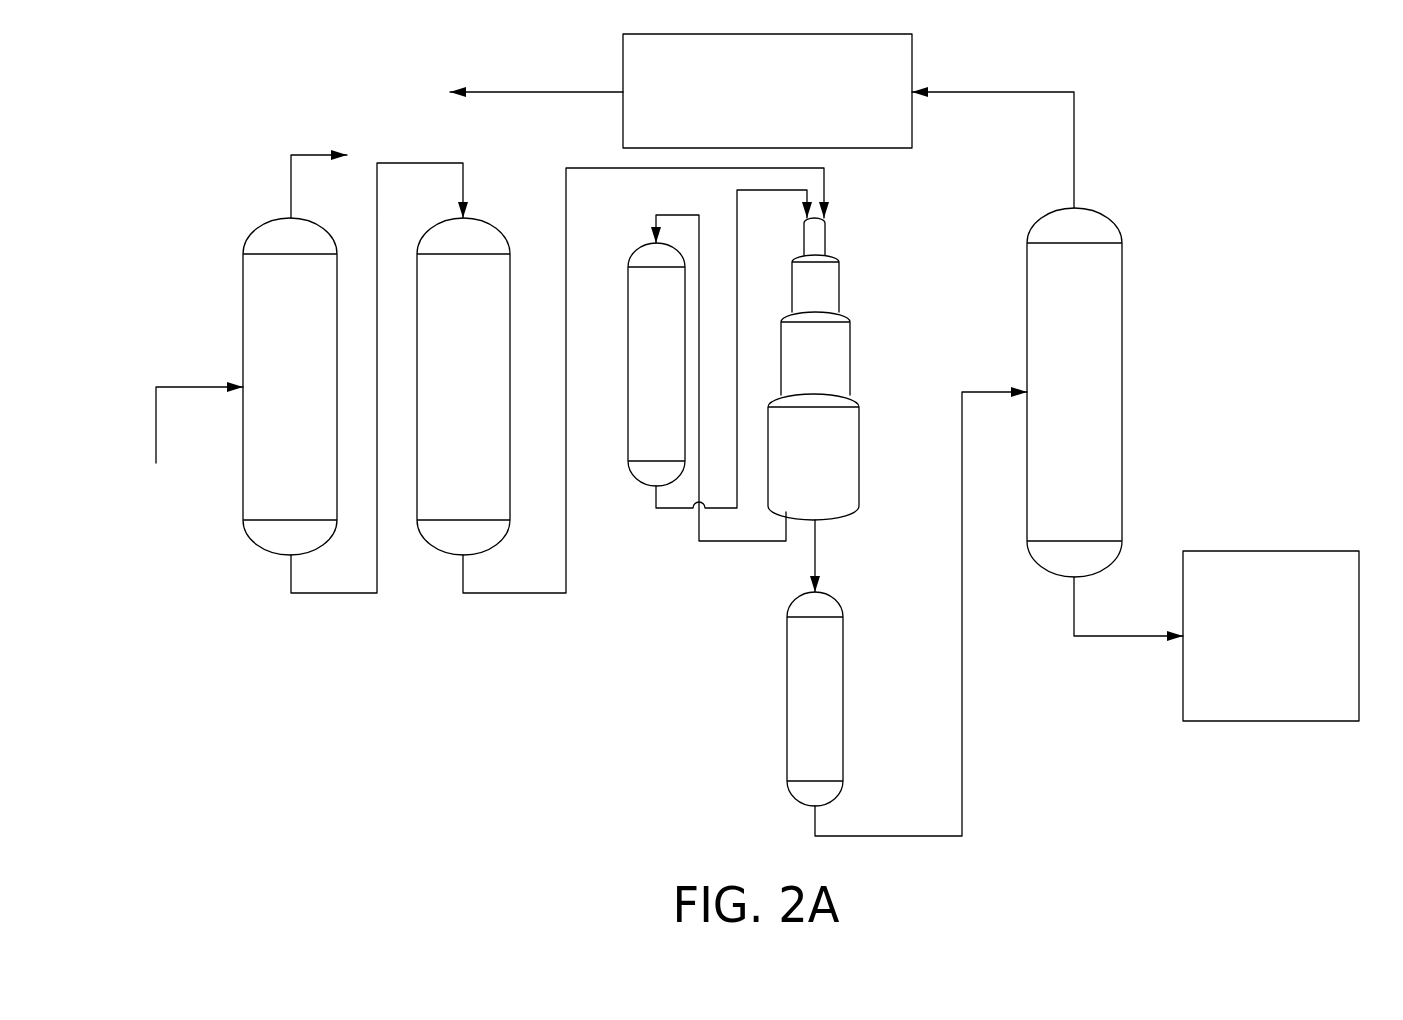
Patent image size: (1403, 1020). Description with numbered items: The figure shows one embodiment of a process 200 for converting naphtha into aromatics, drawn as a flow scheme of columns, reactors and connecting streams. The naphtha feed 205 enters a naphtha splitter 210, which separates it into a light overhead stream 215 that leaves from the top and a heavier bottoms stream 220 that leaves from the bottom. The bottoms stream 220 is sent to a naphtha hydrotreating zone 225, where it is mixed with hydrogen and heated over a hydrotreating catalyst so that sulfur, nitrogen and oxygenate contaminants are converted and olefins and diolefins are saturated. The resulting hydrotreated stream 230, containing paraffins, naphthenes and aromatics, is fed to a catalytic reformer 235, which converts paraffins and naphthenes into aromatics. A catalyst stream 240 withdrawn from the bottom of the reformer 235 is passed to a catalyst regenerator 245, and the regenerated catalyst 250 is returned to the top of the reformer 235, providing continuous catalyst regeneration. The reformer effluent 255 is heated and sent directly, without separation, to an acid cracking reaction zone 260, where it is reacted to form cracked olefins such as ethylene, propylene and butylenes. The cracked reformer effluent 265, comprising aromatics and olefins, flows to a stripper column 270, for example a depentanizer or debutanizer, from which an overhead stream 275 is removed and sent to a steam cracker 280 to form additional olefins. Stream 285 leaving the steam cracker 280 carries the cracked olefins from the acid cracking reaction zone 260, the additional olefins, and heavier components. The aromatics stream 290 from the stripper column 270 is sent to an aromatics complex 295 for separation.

The process 200 is at (262, 96).
The naphtha feed 205 is at (188, 387).
The naphtha splitter 210 is at (243, 295).
The overhead stream 215 is at (291, 186).
The bottoms stream 220 is at (288, 583).
The naphtha hydrotreating zone 225 is at (480, 218).
The hydrotreated stream 230 is at (462, 583).
The catalytic reformer 235 is at (833, 256).
The catalyst stream 240 is at (744, 543).
The catalyst regenerator 245 is at (655, 240).
The regenerated catalyst 250 is at (672, 510).
The reformer effluent 255 is at (818, 539).
The acid cracking reaction zone 260 is at (832, 593).
The cracked reformer effluent 265 is at (900, 834).
The stripper column 270 is at (1037, 220).
The overhead stream 275 is at (1040, 90).
The steam cracker 280 is at (888, 33).
The stream 285 is at (567, 90).
The aromatics stream 290 is at (1123, 638).
The aromatics complex 295 is at (1315, 550).